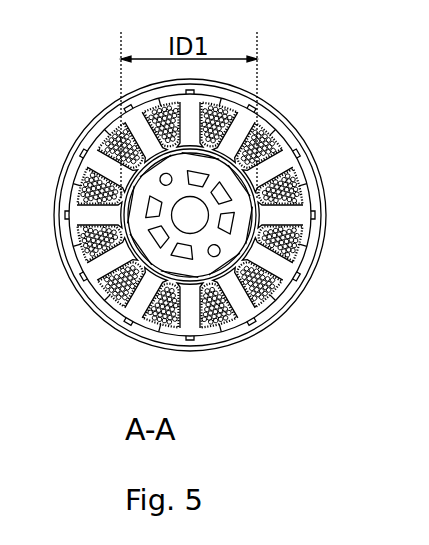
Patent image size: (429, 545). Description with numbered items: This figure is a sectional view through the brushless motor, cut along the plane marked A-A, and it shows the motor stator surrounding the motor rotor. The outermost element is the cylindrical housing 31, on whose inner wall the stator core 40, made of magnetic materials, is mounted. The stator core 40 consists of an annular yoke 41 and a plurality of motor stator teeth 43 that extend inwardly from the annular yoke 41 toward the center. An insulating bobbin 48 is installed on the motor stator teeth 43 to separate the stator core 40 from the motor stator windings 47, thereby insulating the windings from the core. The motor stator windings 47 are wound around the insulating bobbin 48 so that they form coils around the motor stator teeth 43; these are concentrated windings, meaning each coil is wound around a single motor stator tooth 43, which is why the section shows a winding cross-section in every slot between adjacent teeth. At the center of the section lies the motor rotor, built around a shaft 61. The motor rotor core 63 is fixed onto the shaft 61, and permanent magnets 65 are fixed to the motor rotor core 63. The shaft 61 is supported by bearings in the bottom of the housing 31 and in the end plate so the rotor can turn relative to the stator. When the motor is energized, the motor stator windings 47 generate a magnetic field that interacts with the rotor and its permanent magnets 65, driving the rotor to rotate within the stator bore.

The housing 31 is at (252, 332).
The stator core 40 is at (243, 234).
The annular yoke 41 is at (272, 308).
The motor stator teeth 43 is at (216, 215).
The motor stator windings 47 is at (302, 235).
The insulating bobbin 48 is at (278, 155).
The shaft 61 is at (176, 216).
The motor rotor core 63 is at (154, 265).
The permanent magnets 65 is at (180, 283).